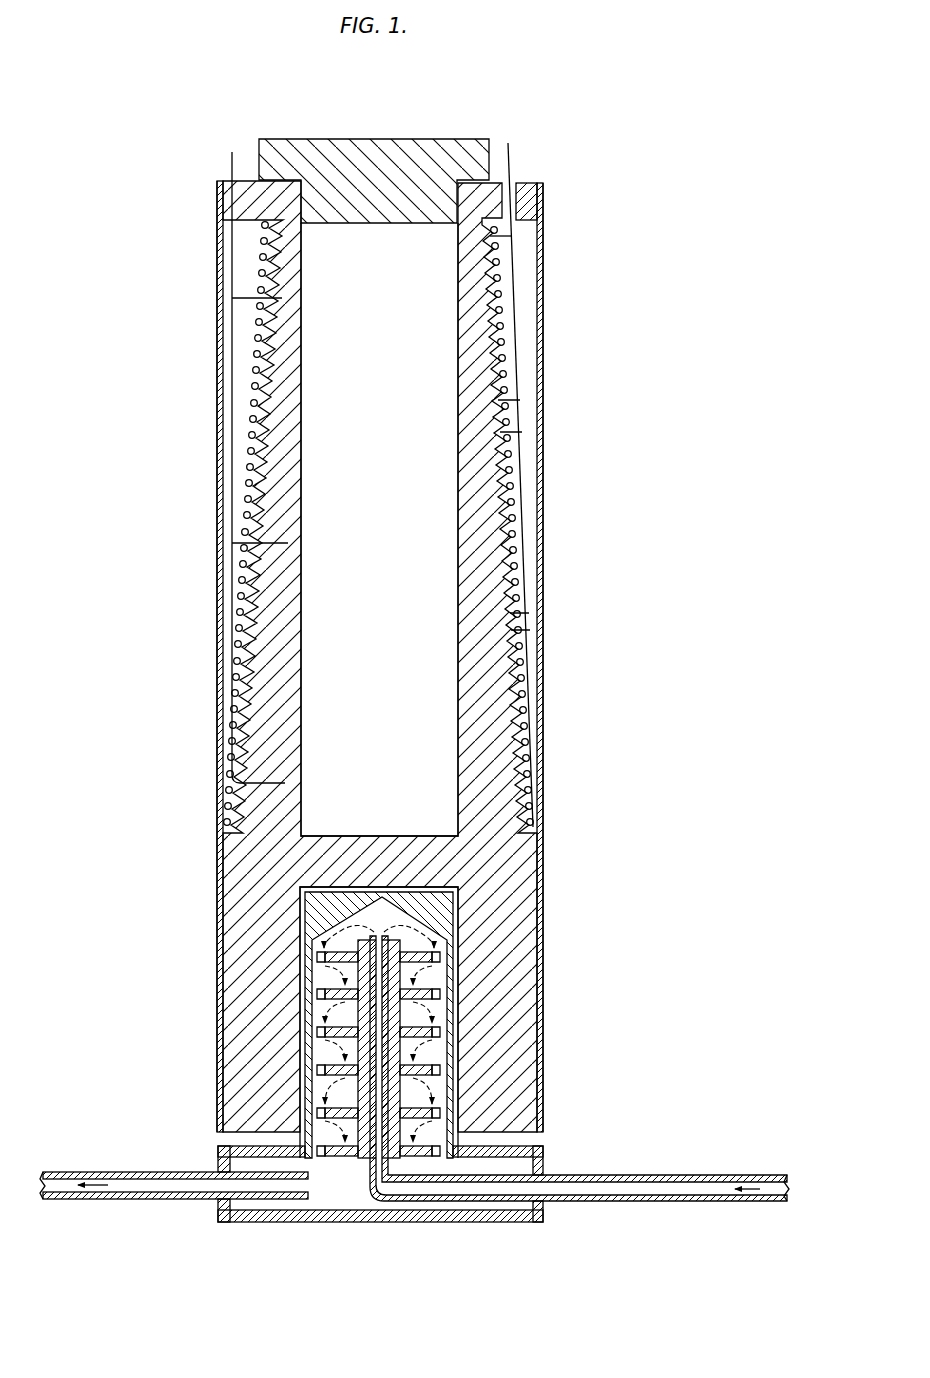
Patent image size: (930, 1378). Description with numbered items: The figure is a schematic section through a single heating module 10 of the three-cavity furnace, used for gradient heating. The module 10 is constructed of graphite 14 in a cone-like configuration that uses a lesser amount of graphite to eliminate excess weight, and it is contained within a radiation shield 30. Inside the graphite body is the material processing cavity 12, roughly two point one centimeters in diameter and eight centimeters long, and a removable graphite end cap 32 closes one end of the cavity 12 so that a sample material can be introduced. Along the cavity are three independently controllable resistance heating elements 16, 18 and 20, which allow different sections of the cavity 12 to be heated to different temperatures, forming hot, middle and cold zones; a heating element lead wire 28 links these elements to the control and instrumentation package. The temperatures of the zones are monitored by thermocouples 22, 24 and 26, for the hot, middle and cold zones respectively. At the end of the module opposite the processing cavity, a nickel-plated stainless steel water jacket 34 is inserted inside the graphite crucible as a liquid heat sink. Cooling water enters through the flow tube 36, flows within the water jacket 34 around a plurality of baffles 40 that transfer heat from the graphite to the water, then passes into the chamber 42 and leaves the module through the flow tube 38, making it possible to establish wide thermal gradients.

The heating module 10 is at (441, 129).
The material processing cavity 12 is at (398, 684).
The graphite 14 is at (245, 885).
The resistance heating element 16 is at (498, 280).
The resistance heating element 18 is at (508, 472).
The resistance heating element 20 is at (527, 736).
The thermocouple 22 is at (278, 297).
The thermocouple 24 is at (280, 537).
The thermocouple 26 is at (281, 780).
The heating element lead wire 28 is at (516, 340).
The radiation shield 30 is at (543, 566).
The removable graphite end cap 32 is at (362, 150).
The stainless steel water jacket 34 is at (300, 992).
The flow tube 36 is at (645, 1175).
The flow tube 38 is at (110, 1172).
The baffles 40 is at (312, 1068).
The chamber 42 is at (370, 1222).